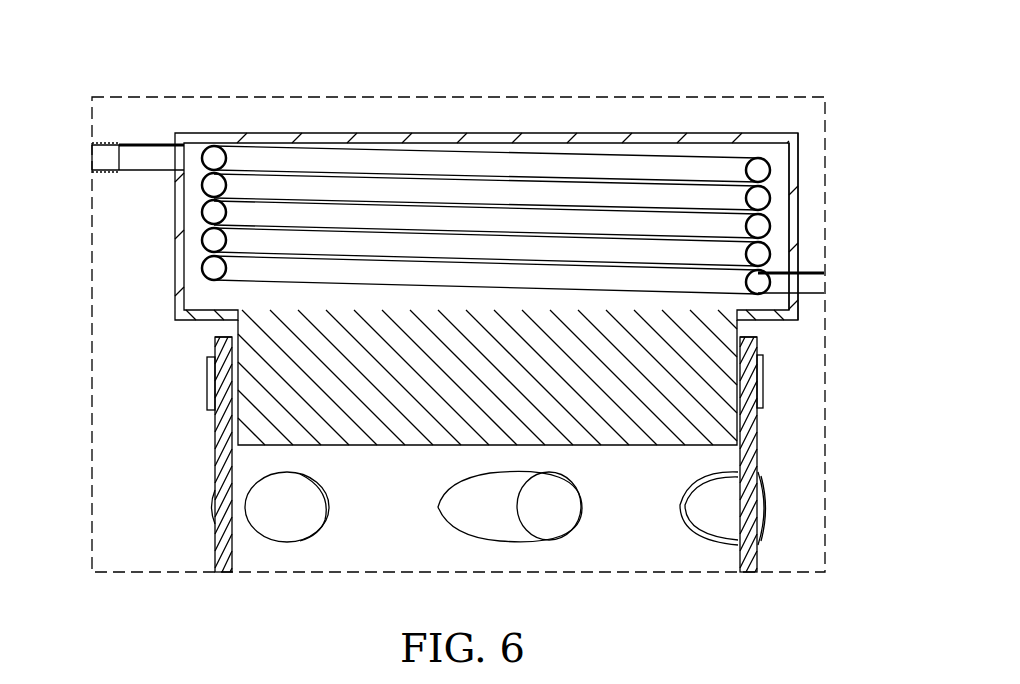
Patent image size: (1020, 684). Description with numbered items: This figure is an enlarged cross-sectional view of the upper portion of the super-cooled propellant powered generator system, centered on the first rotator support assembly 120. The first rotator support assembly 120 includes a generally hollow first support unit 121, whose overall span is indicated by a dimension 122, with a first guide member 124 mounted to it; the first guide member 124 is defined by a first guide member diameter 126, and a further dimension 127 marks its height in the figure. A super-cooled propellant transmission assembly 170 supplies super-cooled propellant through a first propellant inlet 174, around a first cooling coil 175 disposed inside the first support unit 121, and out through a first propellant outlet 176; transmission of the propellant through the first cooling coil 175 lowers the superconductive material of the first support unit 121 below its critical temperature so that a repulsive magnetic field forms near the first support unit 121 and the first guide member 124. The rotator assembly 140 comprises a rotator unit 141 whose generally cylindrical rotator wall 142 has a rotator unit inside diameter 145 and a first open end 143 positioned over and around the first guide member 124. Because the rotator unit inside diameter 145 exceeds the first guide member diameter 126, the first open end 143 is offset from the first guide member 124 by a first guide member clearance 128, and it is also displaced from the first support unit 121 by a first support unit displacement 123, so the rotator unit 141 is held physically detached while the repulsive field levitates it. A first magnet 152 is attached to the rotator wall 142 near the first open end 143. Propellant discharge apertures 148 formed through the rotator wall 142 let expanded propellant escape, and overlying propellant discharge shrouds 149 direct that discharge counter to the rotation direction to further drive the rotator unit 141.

The first rotator support assembly 120 is at (805, 86).
The first support unit 121 is at (792, 187).
The housing width 122 is at (176, 107).
The first support unit displacement 123 is at (161, 334).
The first guide member 124 is at (718, 353).
The first guide member diameter 126 is at (736, 406).
The base block height 127 is at (638, 313).
The first guide member clearance 128 is at (218, 418).
The rotator assembly 140 is at (766, 431).
The rotator unit 141 is at (216, 525).
The rotator wall 142 is at (745, 558).
The first open end 143 is at (209, 338).
The rotator unit inside diameter 145 is at (739, 553).
The propellant discharge aperture 148 is at (562, 508).
The propellant discharge shroud 149 is at (485, 518).
The first magnet 152 is at (758, 383).
The super-cooled propellant transmission assembly 170 is at (131, 62).
The first propellant inlet 174 is at (135, 158).
The first cooling coil 175 is at (328, 188).
The first propellant outlet 176 is at (812, 288).